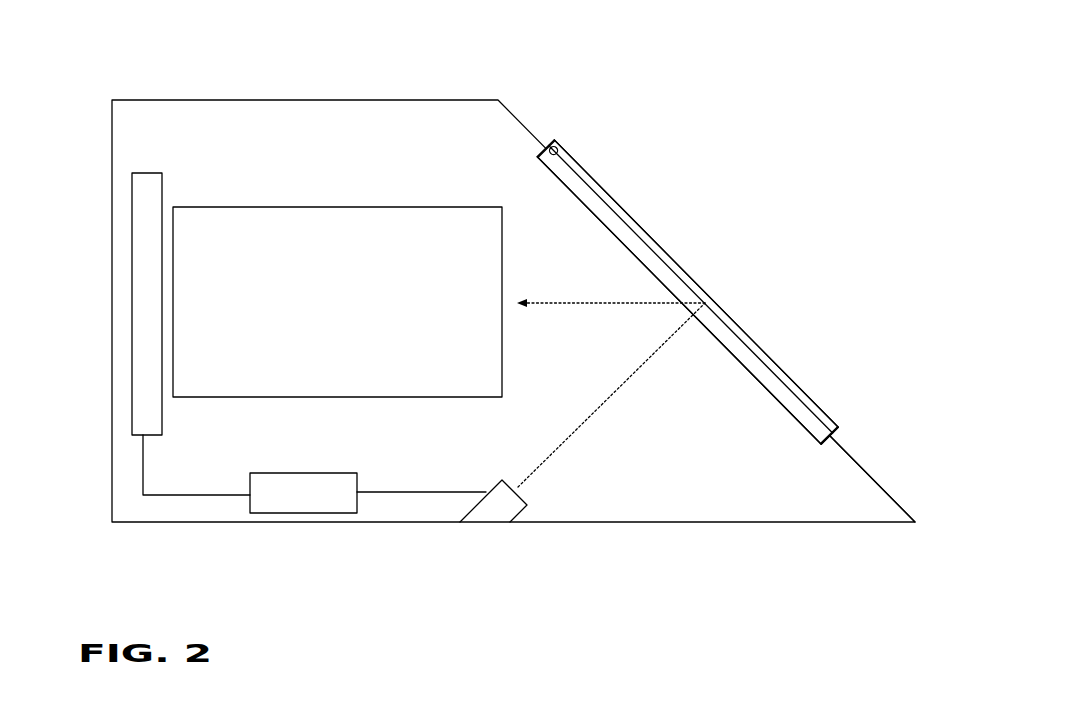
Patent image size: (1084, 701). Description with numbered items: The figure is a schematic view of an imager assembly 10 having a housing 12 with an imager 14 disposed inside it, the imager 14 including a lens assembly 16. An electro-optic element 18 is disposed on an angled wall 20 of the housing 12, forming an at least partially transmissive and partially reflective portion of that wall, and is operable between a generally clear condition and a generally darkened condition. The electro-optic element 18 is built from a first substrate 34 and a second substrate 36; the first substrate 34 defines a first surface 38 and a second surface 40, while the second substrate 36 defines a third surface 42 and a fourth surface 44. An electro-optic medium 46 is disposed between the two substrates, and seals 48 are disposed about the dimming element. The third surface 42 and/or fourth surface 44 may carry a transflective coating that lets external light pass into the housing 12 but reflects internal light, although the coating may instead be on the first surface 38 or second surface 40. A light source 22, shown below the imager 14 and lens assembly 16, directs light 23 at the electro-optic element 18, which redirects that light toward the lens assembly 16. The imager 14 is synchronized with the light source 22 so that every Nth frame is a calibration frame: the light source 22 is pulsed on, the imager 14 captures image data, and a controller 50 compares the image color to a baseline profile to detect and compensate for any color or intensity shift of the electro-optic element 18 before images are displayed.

The imager assembly 10 is at (552, 70).
The housing 12 is at (272, 100).
The imager 14 is at (145, 350).
The lens assembly 16 is at (203, 292).
The electro-optic element 18 is at (770, 360).
The wall 20 is at (890, 493).
The light source 22 is at (502, 507).
The light 23 is at (597, 412).
The first substrate 34 is at (815, 417).
The second substrate 36 is at (833, 428).
The first surface 38 is at (565, 185).
The second surface 40 is at (539, 162).
The third surface 42 is at (557, 144).
The fourth surface 44 is at (578, 160).
The electro-optic medium 46 is at (733, 322).
The seals 48 is at (552, 147).
The controller 50 is at (323, 488).